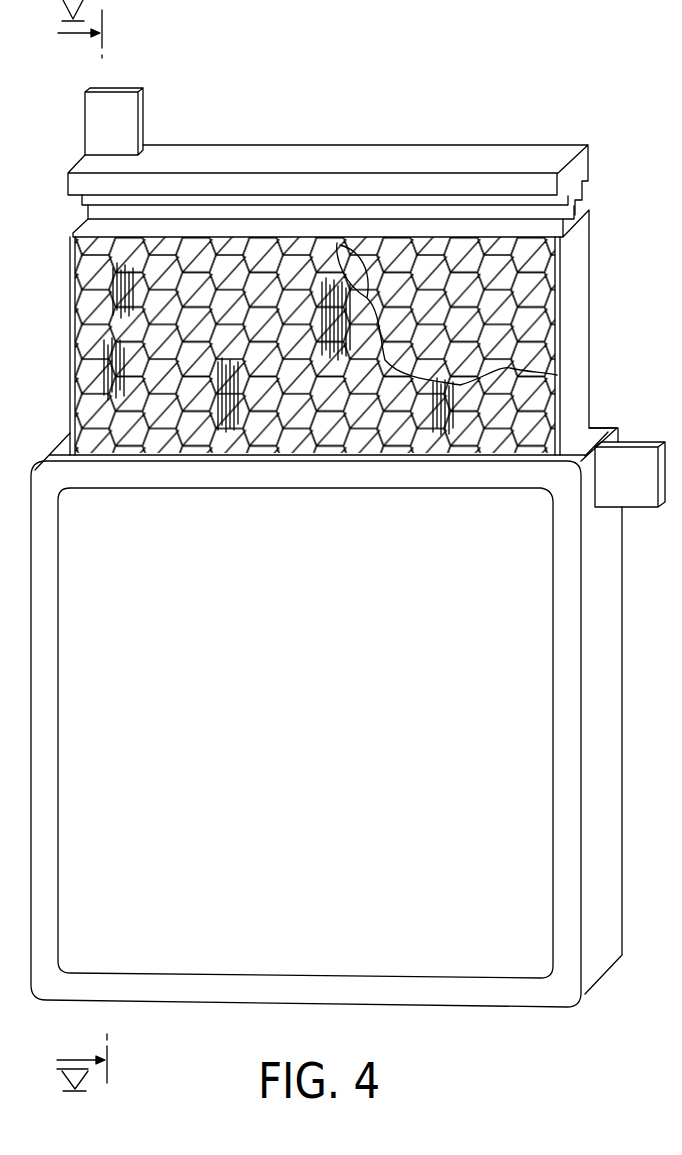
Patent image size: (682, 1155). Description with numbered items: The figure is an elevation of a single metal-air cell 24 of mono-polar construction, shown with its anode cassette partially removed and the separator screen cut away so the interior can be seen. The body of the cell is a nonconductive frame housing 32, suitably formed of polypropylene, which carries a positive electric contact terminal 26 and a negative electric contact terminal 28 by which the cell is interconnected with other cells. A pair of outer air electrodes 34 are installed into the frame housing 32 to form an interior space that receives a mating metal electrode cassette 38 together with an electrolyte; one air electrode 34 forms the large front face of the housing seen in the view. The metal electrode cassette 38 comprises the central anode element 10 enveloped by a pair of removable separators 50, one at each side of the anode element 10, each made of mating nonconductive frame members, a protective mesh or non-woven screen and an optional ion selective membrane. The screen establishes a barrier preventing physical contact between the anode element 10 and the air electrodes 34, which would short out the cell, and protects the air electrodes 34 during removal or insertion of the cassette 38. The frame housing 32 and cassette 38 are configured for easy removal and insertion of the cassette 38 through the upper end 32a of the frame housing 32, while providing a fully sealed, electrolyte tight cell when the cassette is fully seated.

The anode element 10 is at (590, 247).
The cell 24 is at (606, 358).
The positive electric contact terminal 26 is at (636, 444).
The negative electric contact terminal 28 is at (145, 107).
The frame housing 32 is at (615, 637).
The upper end of frame housing 32a is at (604, 428).
The air electrode 34 is at (482, 765).
The metal electrode cassette 38 is at (287, 153).
The separator 50 is at (83, 262).